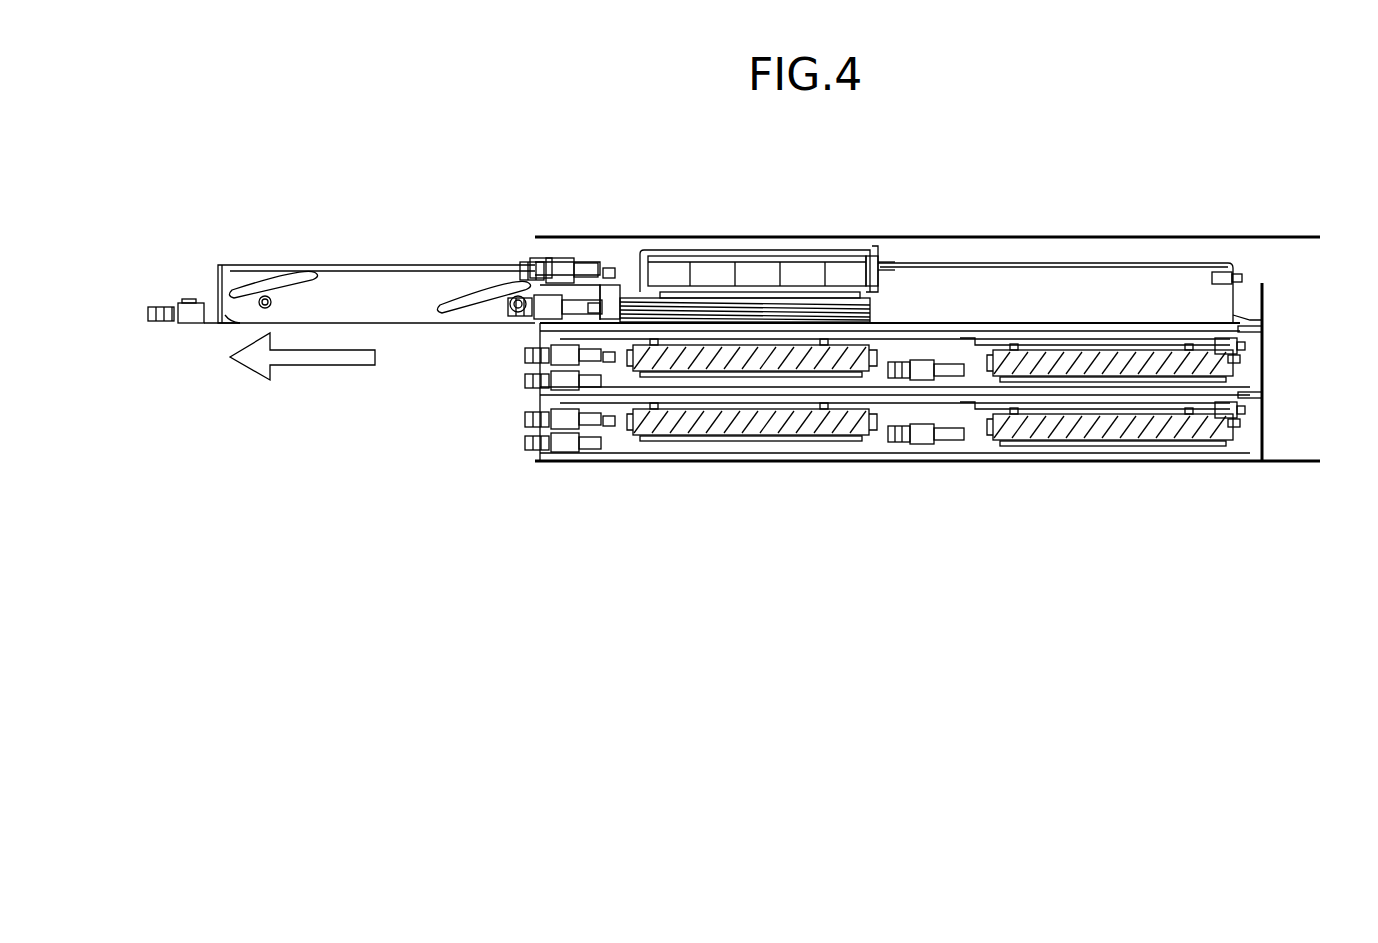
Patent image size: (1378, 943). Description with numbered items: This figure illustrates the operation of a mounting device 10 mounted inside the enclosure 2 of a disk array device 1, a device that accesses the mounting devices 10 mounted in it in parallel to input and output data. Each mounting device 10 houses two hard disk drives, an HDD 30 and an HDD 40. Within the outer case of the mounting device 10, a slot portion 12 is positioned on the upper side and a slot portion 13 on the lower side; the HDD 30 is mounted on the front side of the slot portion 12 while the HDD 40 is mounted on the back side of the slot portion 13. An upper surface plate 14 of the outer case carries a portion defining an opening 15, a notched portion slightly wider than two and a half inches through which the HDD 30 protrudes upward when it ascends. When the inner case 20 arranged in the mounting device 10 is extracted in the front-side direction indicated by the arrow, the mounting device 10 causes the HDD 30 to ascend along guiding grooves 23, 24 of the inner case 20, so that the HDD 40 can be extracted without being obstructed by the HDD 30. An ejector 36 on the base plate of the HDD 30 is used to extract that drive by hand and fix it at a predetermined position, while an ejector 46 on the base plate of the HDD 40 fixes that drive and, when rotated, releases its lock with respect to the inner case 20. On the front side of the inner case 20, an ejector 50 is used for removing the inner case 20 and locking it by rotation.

The disk array device 1 is at (1178, 238).
The enclosure 2 is at (1137, 237).
The mounting device 10 is at (556, 256).
The slot portion 12 is at (1195, 280).
The slot portion 13 is at (1197, 312).
The upper surface plate 14 is at (1043, 263).
The portion defining an opening 15 is at (880, 250).
The inner case 20 is at (262, 263).
The guiding groove 23 is at (374, 273).
The guiding groove 24 is at (456, 310).
The HDD 30 is at (738, 272).
The ejector 36 is at (530, 250).
The HDD 40 is at (690, 322).
The ejector 46 is at (517, 312).
The ejector 50 is at (160, 325).